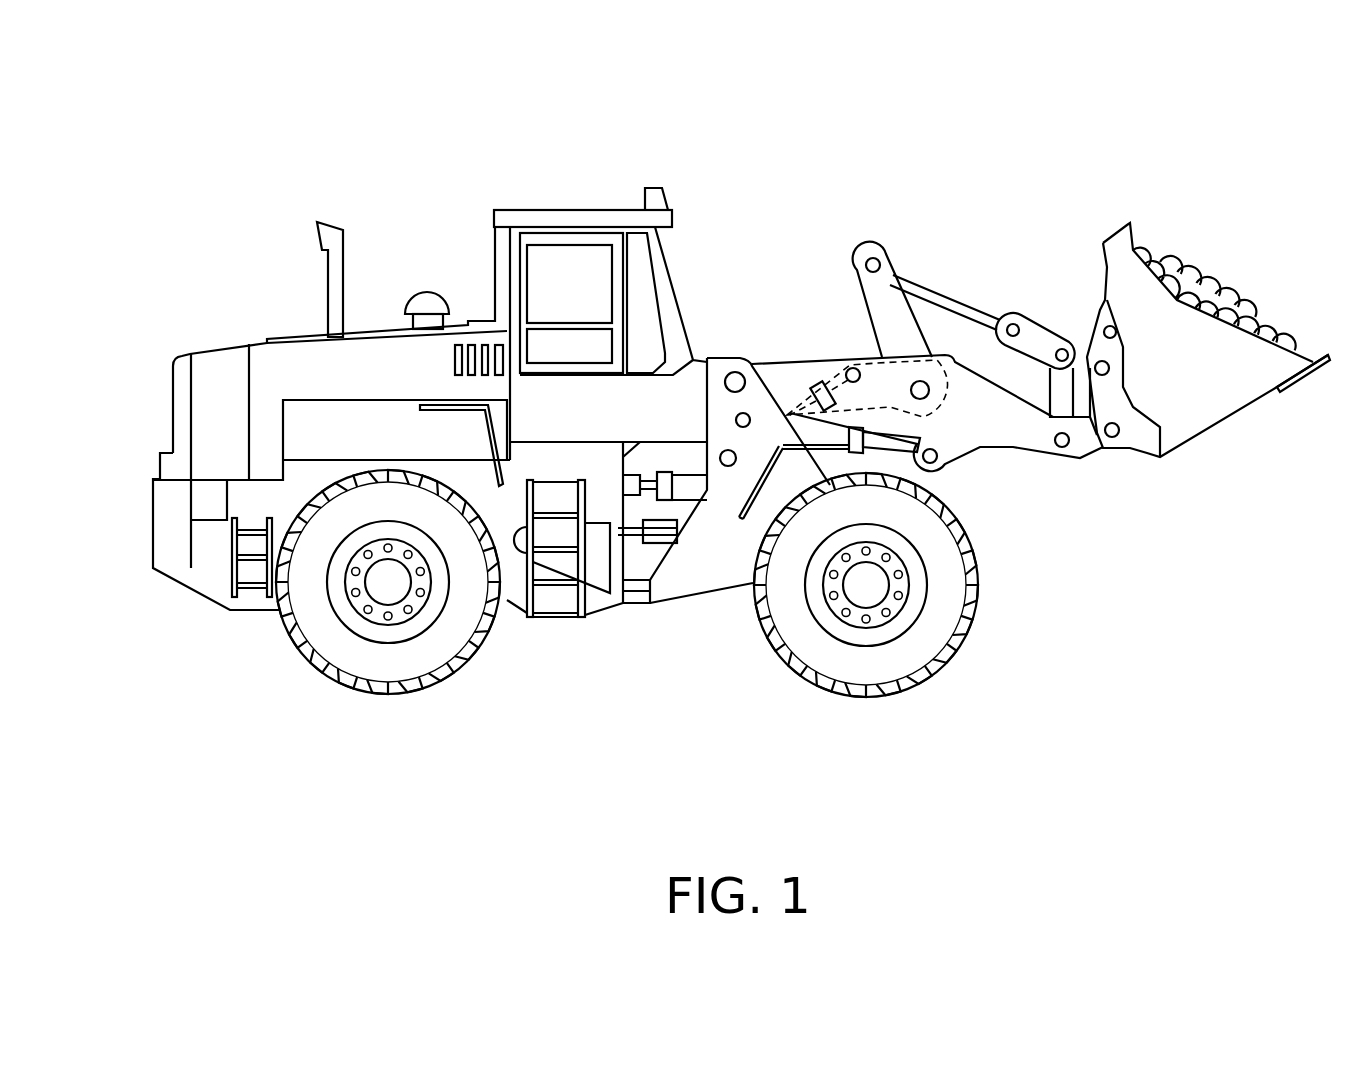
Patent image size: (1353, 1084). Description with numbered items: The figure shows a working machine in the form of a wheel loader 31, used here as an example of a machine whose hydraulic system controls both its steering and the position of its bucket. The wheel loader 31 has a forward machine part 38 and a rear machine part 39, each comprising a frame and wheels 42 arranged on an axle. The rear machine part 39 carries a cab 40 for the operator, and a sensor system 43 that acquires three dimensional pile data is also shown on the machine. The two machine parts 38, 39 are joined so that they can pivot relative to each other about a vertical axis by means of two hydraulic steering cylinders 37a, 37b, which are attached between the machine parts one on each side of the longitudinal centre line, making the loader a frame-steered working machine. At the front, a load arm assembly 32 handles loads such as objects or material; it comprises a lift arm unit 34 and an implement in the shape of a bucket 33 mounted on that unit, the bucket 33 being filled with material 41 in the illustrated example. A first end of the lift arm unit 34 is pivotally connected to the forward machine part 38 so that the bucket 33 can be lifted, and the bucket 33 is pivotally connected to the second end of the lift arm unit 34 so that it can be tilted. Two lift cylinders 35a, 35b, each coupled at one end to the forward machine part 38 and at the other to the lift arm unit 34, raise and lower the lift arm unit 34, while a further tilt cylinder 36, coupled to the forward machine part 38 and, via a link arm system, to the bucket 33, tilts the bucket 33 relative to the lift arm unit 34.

The wheel loader 31 is at (393, 150).
The load arm assembly 32 is at (1025, 270).
The bucket 33 is at (1190, 397).
The lift arm unit 34 is at (1080, 445).
The lift cylinder 35a is at (962, 521).
The lift cylinder 35b is at (897, 457).
The tilt cylinder 36 is at (807, 384).
The steering cylinder 37a is at (744, 621).
The steering cylinder 37b is at (688, 485).
The forward machine part 38 is at (675, 583).
The rear machine part 39 is at (210, 565).
The cab 40 is at (590, 220).
The material 41 is at (1213, 290).
The wheels 42 is at (330, 637).
The sensor system 43 is at (667, 193).